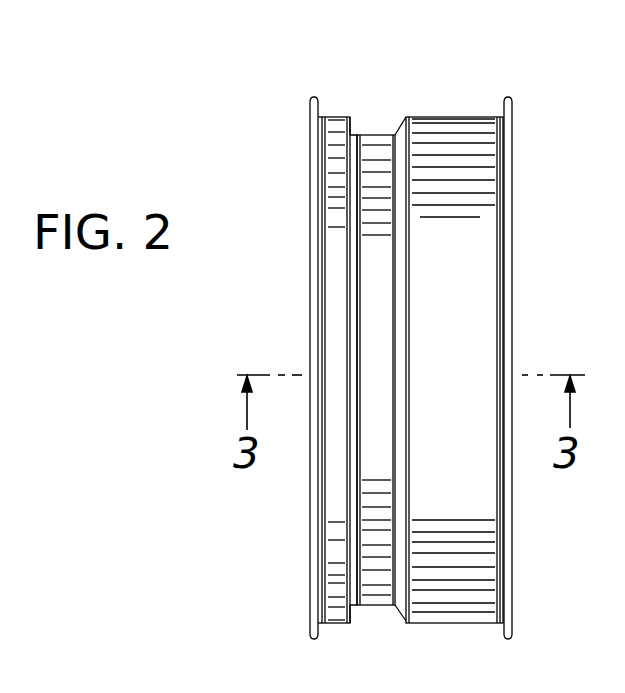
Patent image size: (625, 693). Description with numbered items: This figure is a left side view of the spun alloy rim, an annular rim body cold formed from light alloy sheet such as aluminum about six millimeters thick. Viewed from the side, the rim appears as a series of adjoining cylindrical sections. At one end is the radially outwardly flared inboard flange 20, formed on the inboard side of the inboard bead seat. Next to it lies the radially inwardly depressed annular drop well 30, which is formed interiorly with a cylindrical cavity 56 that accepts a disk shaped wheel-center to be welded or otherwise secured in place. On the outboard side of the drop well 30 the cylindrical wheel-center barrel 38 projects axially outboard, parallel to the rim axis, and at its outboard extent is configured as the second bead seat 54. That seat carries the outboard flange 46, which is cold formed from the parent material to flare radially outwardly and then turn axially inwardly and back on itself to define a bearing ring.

The inboard flange 20 is at (310, 98).
The cylindrical cavity 56 is at (335, 113).
The drop well 30 is at (375, 133).
The cylindrical wheel-center barrel 38 is at (432, 115).
The second bead seat 54 is at (478, 113).
The outboard flange 46 is at (512, 98).